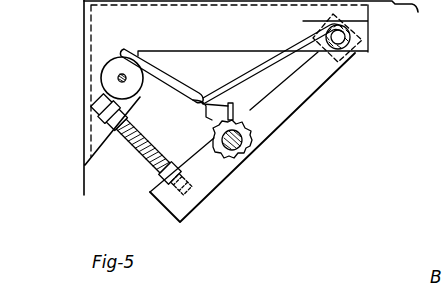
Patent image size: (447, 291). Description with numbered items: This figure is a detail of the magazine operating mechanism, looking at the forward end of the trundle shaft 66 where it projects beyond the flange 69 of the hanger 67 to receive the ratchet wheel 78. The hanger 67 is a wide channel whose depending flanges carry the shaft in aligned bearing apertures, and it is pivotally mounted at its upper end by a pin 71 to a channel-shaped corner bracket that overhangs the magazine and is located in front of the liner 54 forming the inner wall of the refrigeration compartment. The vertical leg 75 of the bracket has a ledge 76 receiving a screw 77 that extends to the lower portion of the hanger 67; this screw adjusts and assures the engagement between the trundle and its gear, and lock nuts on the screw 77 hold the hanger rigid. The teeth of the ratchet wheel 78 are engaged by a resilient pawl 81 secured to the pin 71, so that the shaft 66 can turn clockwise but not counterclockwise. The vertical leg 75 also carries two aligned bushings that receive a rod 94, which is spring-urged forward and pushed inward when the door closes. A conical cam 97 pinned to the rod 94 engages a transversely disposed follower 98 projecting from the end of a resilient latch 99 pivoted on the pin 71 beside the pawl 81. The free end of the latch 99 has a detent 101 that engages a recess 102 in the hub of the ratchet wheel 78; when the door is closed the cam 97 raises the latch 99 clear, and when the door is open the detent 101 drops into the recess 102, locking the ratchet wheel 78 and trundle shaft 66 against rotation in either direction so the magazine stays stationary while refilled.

The liner 54 is at (262, 13).
The vertical leg 75 is at (98, 40).
The pin 71 is at (370, 22).
The rod 94 is at (120, 76).
The conical cam 97 is at (118, 77).
The follower 98 is at (163, 68).
The resilient latch 99 is at (262, 62).
The detent 101 is at (196, 108).
The resilient pawl 81 is at (236, 104).
The ratchet wheel 78 is at (253, 131).
The trundle shaft 66 is at (247, 150).
The flange 69 is at (312, 92).
The hanger 67 is at (193, 152).
The ledge 76 is at (100, 148).
The screw 77 is at (142, 160).
The recess 102 is at (186, 168).